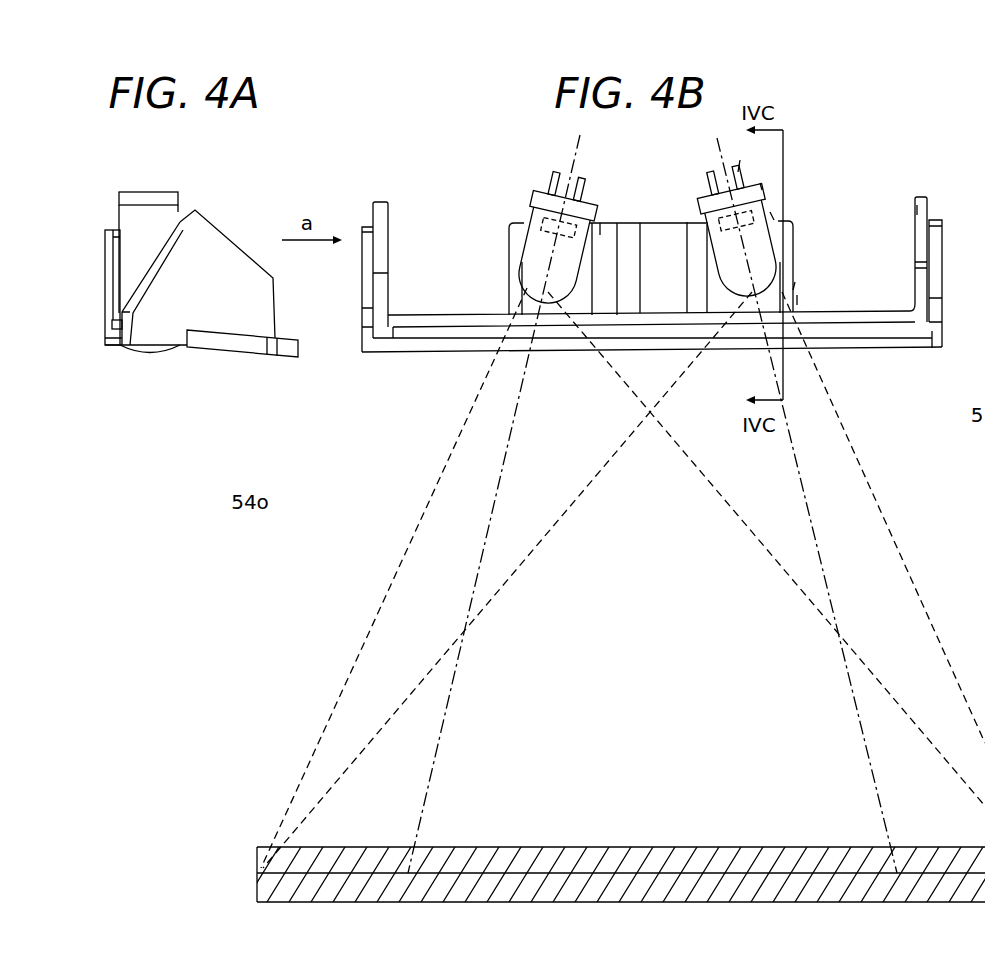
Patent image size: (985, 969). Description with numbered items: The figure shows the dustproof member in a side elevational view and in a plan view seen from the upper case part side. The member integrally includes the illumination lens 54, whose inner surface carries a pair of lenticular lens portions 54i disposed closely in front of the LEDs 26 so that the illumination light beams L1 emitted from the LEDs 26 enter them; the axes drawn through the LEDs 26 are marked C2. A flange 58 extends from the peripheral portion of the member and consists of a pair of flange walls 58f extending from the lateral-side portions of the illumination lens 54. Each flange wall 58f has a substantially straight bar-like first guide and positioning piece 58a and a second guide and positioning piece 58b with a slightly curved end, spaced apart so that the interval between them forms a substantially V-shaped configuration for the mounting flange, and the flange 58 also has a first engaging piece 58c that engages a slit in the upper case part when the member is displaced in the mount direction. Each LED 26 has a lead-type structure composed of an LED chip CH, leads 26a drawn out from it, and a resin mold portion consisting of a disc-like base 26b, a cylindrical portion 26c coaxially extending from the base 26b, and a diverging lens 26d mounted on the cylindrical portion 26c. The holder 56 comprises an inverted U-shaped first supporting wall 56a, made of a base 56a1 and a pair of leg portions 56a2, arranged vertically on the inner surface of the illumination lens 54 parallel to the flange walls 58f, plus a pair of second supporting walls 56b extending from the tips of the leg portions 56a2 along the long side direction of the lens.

In FIG. 4A, the LED 26 is at (176, 208).
In FIG. 4B, the LED 26 is at (706, 176).
In FIG. 4B, the lead 26a is at (741, 160).
In FIG. 4B, the base 26b is at (761, 183).
In FIG. 4B, the cylindrical portion 26c is at (771, 212).
In FIG. 4B, the diverging lens 26d is at (795, 282).
In FIG. 4B, the LED chip CH is at (530, 226).
In FIG. 4A, the illumination lens 54 is at (150, 353).
In FIG. 4B, the illumination lens 54 is at (790, 358).
In FIG. 4B, the lenticular lens portion 54i is at (798, 295).
In FIG. 4A, the holder 56 is at (103, 318).
In FIG. 4B, the holder 56 is at (519, 239).
In FIG. 4B, the first supporting wall 56a is at (603, 232).
In FIG. 4B, the base 56a1 is at (668, 223).
In FIG. 4B, the leg portion 56a2 is at (607, 222).
In FIG. 4B, the second supporting wall 56b is at (515, 257).
In FIG. 4A, the flange 58 is at (217, 219).
In FIG. 4B, the flange 58 is at (917, 186).
In FIG. 4A, the first guide and positioning piece 58a is at (222, 350).
In FIG. 4A, the second guide and positioning piece 58b is at (150, 260).
In FIG. 4B, the second guide and positioning piece 58b is at (366, 246).
In FIG. 4A, the first engaging piece 58c is at (289, 356).
In FIG. 4B, the first engaging piece 58c is at (560, 348).
In FIG. 4A, the flange wall 58f is at (235, 260).
In FIG. 4B, the illumination light beam L1 is at (407, 540).
In FIG. 4B, the optical axis C2 is at (458, 682).